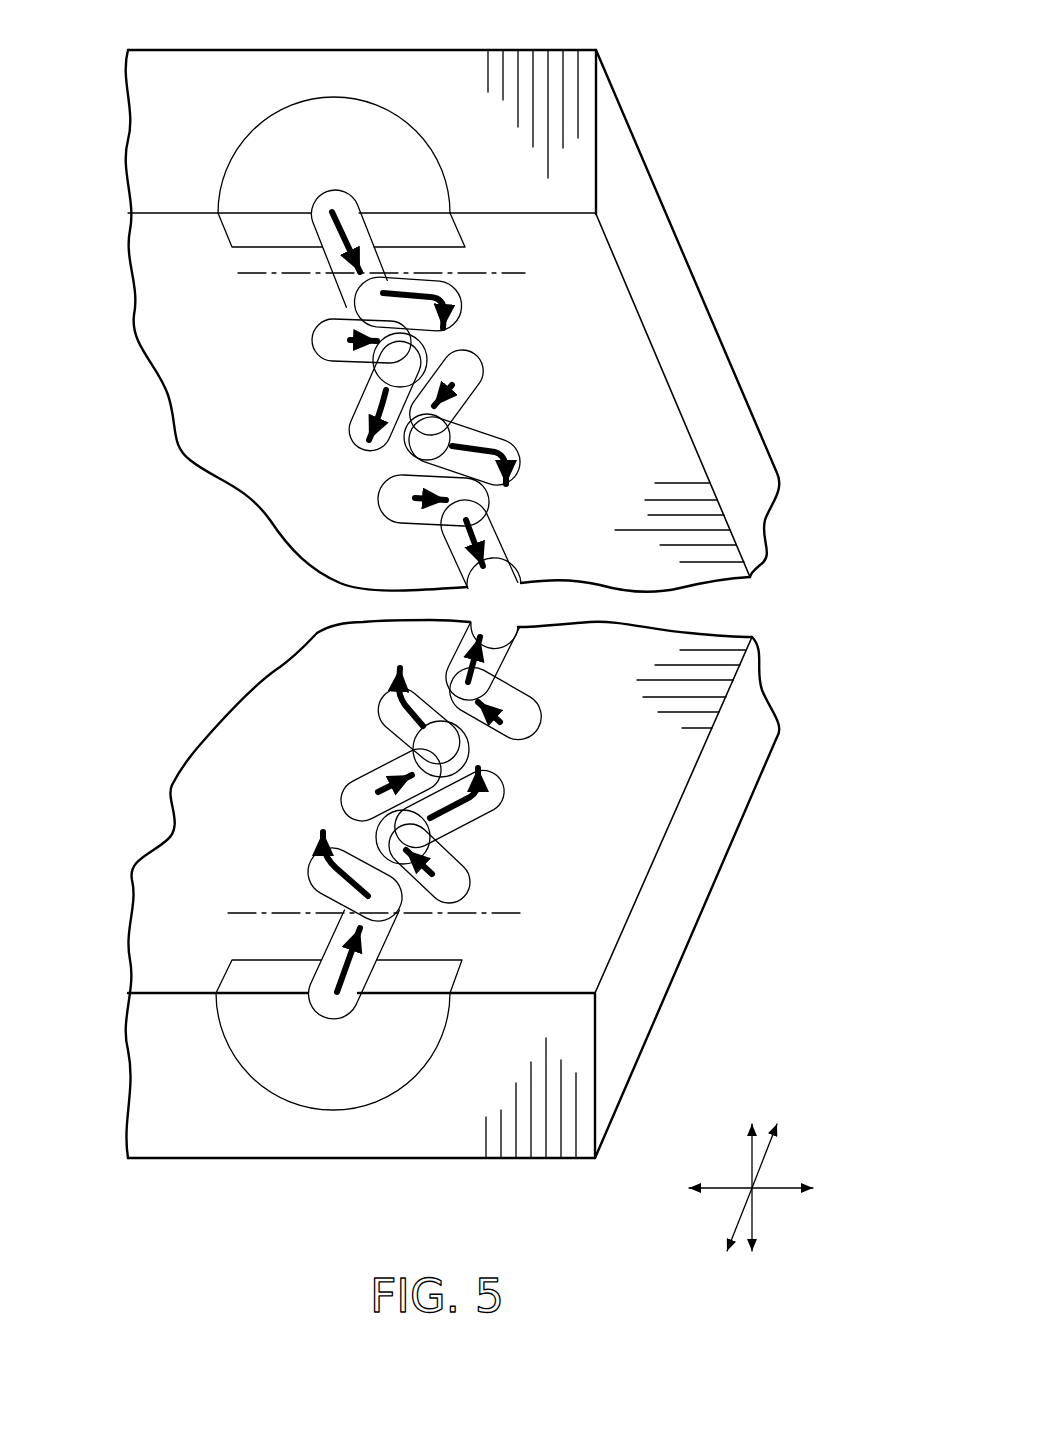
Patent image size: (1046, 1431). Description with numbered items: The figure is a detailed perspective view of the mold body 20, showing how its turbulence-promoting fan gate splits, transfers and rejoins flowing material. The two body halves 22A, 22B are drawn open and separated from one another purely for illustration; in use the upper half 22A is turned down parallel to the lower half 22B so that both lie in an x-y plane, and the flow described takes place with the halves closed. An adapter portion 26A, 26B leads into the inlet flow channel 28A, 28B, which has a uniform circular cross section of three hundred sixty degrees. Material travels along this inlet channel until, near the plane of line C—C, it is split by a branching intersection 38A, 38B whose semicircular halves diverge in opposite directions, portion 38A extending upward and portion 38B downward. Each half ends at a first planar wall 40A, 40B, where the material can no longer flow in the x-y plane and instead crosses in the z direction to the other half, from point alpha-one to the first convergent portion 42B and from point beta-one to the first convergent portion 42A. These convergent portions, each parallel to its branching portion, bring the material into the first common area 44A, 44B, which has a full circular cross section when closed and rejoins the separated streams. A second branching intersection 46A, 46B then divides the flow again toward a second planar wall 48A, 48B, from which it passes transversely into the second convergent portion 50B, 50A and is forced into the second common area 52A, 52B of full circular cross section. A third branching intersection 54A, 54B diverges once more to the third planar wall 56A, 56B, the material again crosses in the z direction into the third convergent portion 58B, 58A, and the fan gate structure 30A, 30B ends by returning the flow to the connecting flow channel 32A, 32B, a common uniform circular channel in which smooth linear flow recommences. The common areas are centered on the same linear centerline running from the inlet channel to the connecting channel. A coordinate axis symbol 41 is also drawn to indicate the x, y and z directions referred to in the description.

The mold body 20 is at (800, 628).
The body half 22A is at (657, 190).
The body half 22B is at (712, 893).
The adapter portion 26A is at (357, 118).
The adapter portion 26B is at (317, 1093).
The inlet flow channel 28A is at (376, 263).
The inlet flow channel 28B is at (333, 953).
The turbulence-promoting fan gate structure 30A is at (597, 422).
The turbulence-promoting fan gate structure 30B is at (588, 737).
The connecting flow channel 32A is at (496, 545).
The connecting flow channel 32B is at (499, 656).
The branching intersection 38A is at (368, 306).
The branching intersection 38B is at (333, 888).
The first planar wall 40A is at (466, 313).
The first planar wall 40B is at (323, 866).
The coordinate axes 41 is at (699, 1237).
The first convergent portion 42A is at (312, 340).
The first convergent portion 42B is at (465, 883).
The first common area 44A is at (390, 372).
The first common area 44B is at (415, 838).
The second branching intersection 46A is at (366, 404).
The second branching intersection 46B is at (484, 797).
The second planar wall 48A is at (356, 428).
The second planar wall 48B is at (494, 778).
The second convergent portion 50A is at (482, 373).
The second convergent portion 50B is at (358, 795).
The second common area 52A is at (445, 432).
The second common area 52B is at (428, 755).
The third branching intersection 54A is at (512, 453).
The third branching intersection 54B is at (392, 708).
The third planar wall 56A is at (517, 474).
The third planar wall 56B is at (392, 695).
The third convergent portion 58A is at (381, 497).
The third convergent portion 58B is at (536, 703).